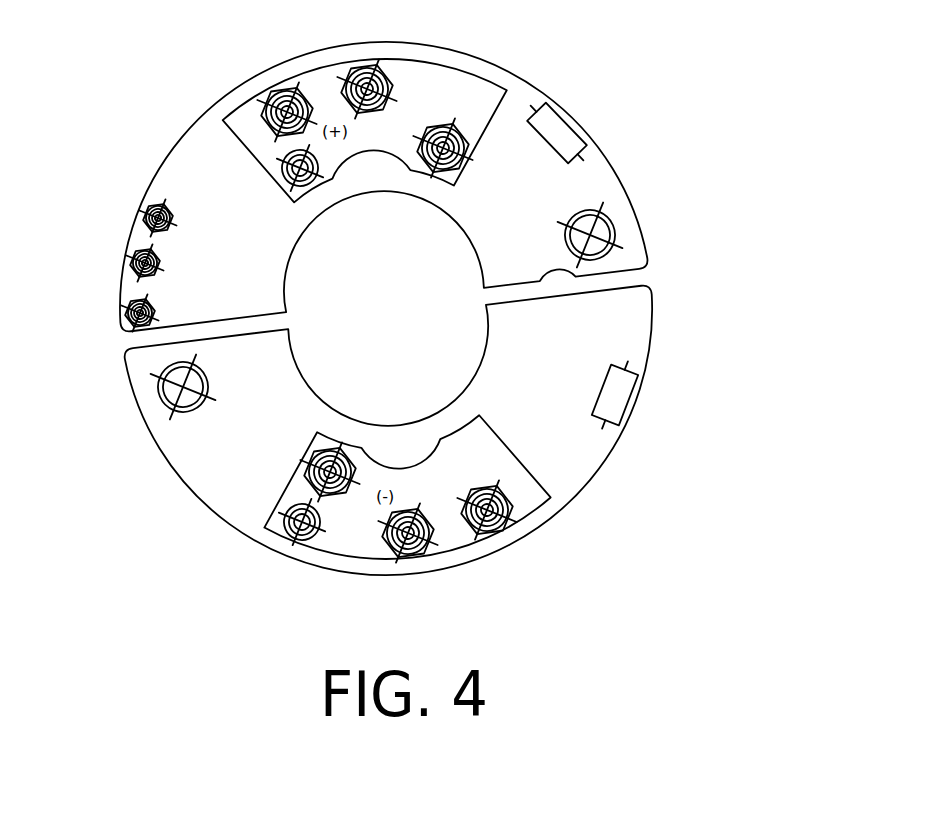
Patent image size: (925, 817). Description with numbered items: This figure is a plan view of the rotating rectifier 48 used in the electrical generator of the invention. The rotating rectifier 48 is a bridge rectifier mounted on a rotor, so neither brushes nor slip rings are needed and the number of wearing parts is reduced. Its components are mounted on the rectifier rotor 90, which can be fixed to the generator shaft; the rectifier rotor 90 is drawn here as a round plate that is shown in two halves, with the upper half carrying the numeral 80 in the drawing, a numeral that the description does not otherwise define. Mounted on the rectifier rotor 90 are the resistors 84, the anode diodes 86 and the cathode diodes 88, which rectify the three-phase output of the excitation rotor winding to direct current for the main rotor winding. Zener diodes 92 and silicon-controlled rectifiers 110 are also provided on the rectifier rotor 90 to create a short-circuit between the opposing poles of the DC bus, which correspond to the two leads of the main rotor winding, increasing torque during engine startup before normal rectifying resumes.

The rotating rectifier 48 is at (648, 62).
The positive heat sink plate 80 is at (228, 132).
The rectifier rotor 90 is at (623, 330).
The cathode diodes 88 is at (268, 92).
The anode diodes 86 is at (503, 521).
The Zener diodes 92 is at (120, 282).
The silicon-controlled rectifiers 110 is at (613, 218).
The resistors 84 is at (633, 397).